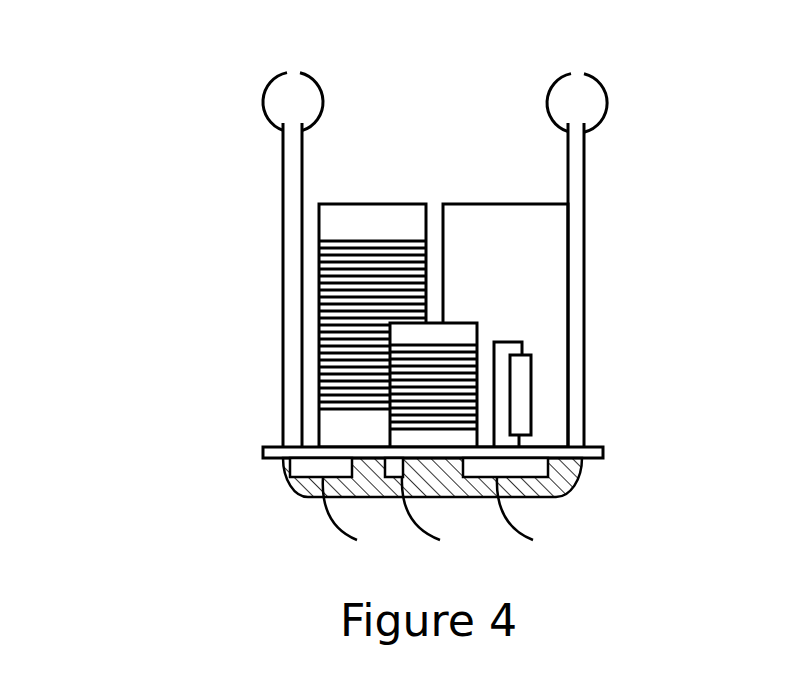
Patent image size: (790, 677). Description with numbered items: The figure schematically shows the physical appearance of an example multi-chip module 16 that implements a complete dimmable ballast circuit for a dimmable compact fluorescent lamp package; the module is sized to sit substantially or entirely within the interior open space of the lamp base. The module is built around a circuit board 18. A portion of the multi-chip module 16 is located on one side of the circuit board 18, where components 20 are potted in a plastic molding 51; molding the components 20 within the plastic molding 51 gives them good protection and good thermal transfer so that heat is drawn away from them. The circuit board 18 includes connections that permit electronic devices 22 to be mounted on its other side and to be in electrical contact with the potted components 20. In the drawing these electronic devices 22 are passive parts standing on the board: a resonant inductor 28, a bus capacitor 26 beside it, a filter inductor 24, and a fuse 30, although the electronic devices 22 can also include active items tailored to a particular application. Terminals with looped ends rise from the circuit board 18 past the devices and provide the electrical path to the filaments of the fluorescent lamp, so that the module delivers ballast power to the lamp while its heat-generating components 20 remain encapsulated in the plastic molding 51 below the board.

The multi-chip module 16 is at (148, 133).
The electronic devices 22 is at (430, 134).
The resonant inductor 28 is at (325, 222).
The bus capacitor 26 is at (542, 240).
The filter inductor 24 is at (475, 332).
The fuse 30 is at (520, 393).
The circuit board 18 is at (263, 448).
The plastic molding 51 is at (305, 497).
The components 20 is at (357, 540).